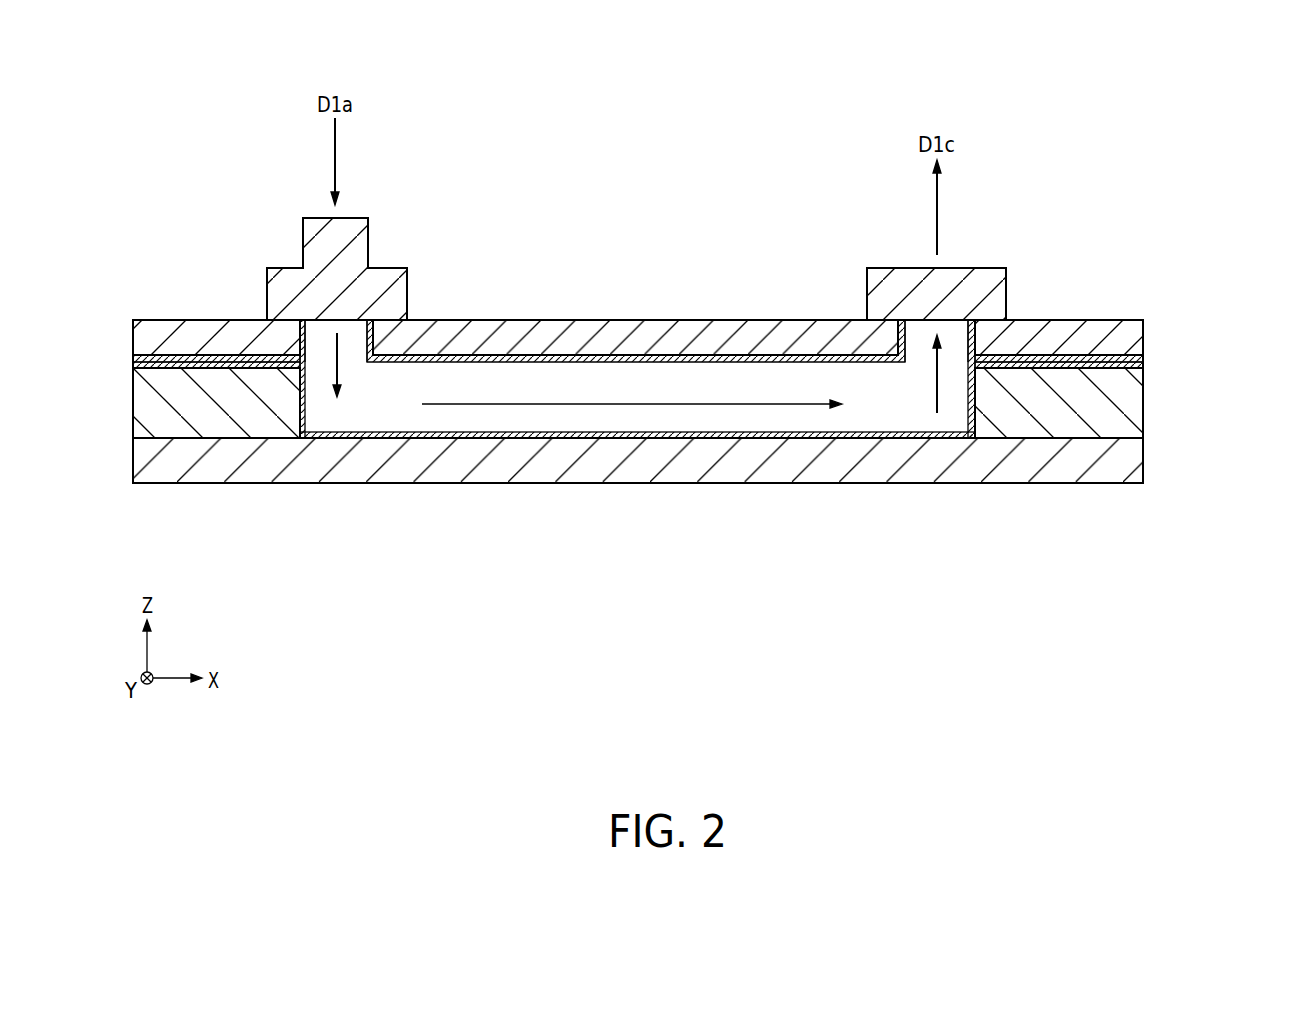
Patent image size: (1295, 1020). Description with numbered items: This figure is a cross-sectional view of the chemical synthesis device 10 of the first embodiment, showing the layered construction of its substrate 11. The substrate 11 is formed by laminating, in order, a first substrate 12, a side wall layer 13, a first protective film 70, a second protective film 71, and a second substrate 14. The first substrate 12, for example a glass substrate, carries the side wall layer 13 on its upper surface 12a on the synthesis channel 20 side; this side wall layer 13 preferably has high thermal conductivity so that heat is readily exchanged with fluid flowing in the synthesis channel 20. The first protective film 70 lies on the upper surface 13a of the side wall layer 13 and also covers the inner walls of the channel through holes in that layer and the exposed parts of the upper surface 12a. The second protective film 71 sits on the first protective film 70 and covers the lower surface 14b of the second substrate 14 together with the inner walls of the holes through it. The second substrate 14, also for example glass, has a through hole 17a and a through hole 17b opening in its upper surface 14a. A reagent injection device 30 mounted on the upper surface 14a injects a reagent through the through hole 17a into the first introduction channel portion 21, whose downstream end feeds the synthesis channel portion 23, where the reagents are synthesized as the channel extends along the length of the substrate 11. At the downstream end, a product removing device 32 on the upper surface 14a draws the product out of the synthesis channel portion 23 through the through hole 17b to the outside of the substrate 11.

The sensor device 10 is at (1172, 178).
The substrate 11 is at (1236, 327).
The first substrate 12 is at (1143, 457).
The upper surface of the first substrate 12a is at (1079, 436).
The side wall layer 13 is at (1143, 400).
The upper surface of the side wall layer 13a is at (138, 355).
The second substrate 14 is at (1143, 336).
The upper surface of the second substrate 14a is at (698, 320).
The lower surface of the second substrate 14b is at (1056, 362).
The through hole 17a is at (305, 312).
The through hole 17b is at (908, 303).
The synthesis channel 20 is at (709, 455).
The first introduction channel portion 21 is at (348, 423).
The synthesis channel portion 23 is at (880, 414).
The reagent injection device 30 is at (358, 243).
The product removing device 32 is at (1000, 290).
The first protective film 70 is at (1143, 365).
The second protective film 71 is at (1143, 358).